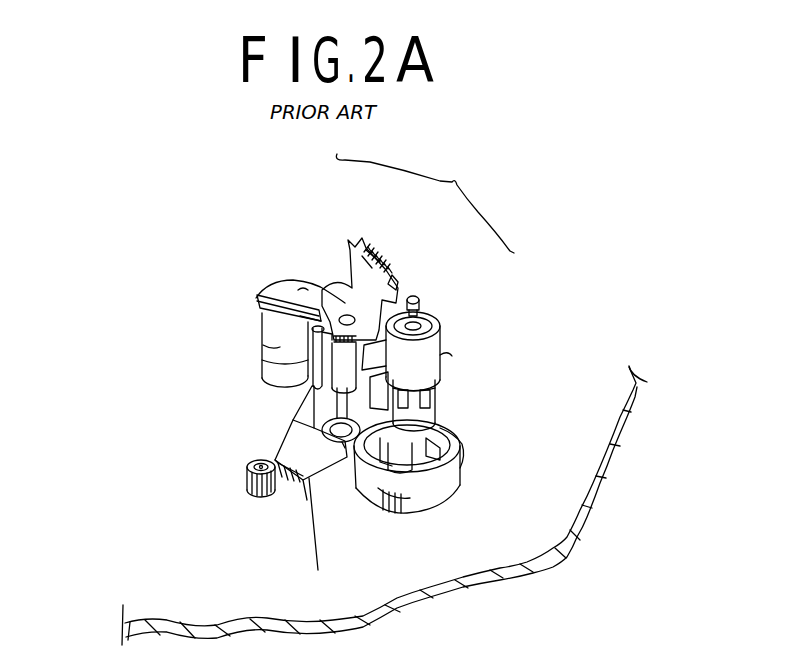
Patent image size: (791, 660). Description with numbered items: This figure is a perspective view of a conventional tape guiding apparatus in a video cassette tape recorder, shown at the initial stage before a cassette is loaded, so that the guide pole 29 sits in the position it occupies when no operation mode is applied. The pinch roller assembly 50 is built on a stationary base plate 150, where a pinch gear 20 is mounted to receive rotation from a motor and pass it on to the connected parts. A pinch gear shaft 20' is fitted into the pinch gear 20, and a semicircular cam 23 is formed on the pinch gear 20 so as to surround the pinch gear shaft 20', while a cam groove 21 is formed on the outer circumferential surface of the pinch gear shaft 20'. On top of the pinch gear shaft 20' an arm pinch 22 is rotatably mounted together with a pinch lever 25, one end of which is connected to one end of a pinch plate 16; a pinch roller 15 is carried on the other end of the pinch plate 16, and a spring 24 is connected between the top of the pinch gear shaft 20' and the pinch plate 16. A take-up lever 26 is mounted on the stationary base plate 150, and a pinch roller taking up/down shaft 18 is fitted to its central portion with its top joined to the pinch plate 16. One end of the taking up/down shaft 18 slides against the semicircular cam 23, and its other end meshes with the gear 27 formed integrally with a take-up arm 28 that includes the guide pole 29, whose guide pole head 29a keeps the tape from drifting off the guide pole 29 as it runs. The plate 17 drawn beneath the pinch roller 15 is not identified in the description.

The pinch roller 15 is at (260, 338).
The pinch plate 16 is at (292, 278).
The plate 17 is at (298, 303).
The pinch roller taking up/down shaft 18 is at (345, 450).
The pinch gear 20 is at (461, 466).
The pinch gear shaft 20' is at (423, 500).
The cam groove 21 is at (438, 410).
The arm pinch 22 is at (453, 340).
The semicircular cam 23 is at (456, 432).
The spring 24 is at (377, 266).
The pinch lever 25 is at (411, 296).
The take-up lever 26 is at (316, 542).
The gear 27 is at (246, 494).
The take-up arm 28 is at (292, 417).
The guide pole 29 is at (308, 381).
The guide pole head 29a is at (323, 337).
The pinch roller assembly 50 is at (425, 201).
The stationary base plate 150 is at (505, 550).